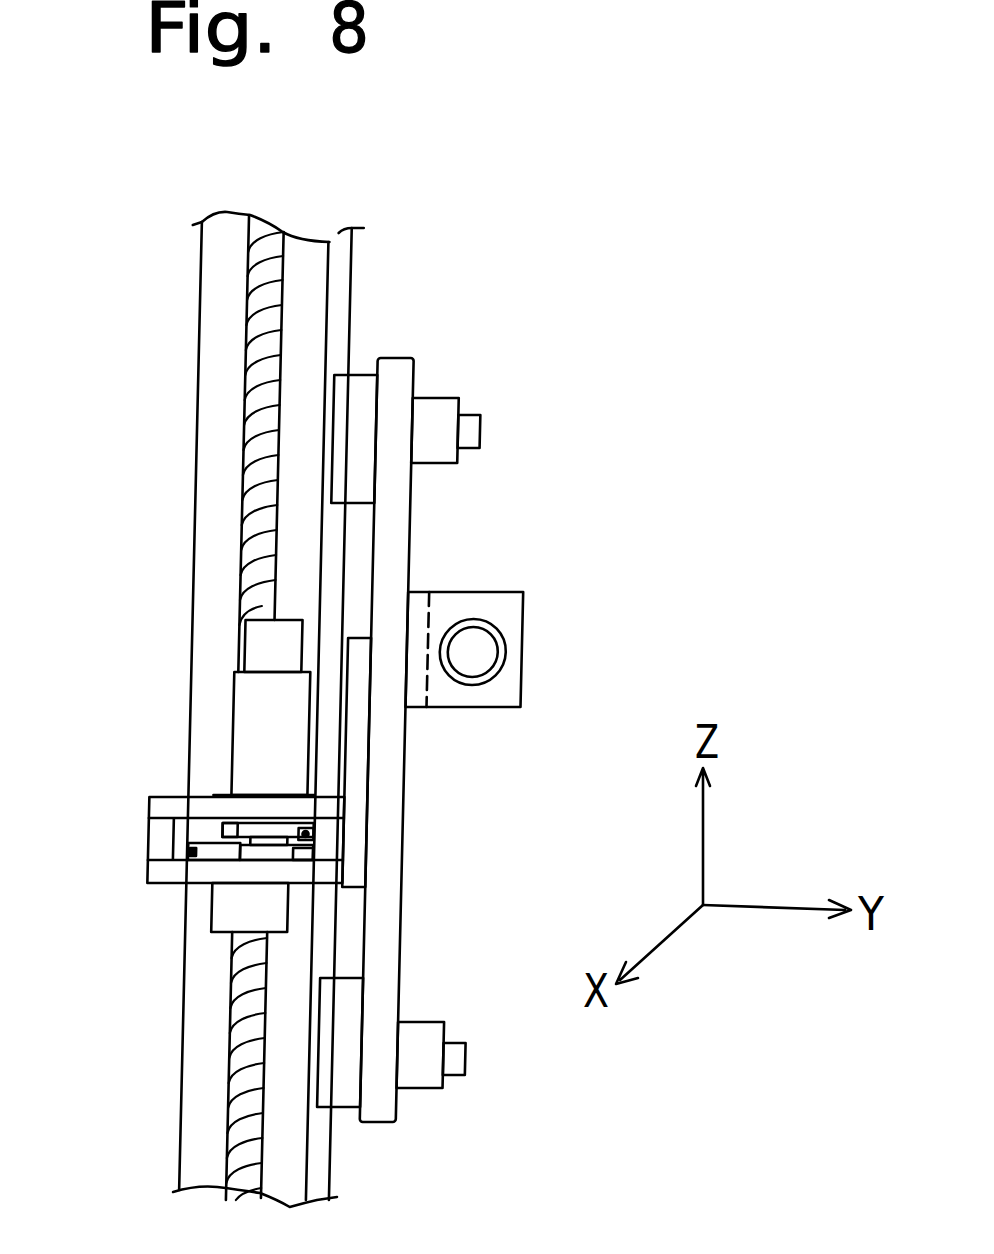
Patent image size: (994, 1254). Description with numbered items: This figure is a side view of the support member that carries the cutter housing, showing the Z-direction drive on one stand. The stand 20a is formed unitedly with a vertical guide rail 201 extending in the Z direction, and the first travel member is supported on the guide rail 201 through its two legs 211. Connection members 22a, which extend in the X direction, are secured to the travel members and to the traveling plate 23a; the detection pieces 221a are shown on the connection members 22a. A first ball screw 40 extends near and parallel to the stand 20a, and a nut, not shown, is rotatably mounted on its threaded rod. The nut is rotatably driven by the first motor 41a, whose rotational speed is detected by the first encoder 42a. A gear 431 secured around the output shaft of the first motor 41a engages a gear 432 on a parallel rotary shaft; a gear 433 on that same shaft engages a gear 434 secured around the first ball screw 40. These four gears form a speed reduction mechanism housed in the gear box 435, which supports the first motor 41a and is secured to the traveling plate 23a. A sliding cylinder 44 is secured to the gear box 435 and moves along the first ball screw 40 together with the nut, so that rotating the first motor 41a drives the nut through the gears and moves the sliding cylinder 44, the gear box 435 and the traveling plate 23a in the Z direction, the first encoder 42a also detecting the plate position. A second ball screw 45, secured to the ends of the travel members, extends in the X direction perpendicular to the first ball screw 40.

The stand 20a is at (313, 260).
The first ball screw 40 is at (273, 300).
The guide rail 201 is at (340, 337).
The leg 211 is at (363, 397).
The detection piece 221a is at (470, 435).
The connection member 22a is at (435, 453).
The traveling plate 23a is at (395, 565).
The second ball screw 45 is at (500, 657).
The first encoder 42a is at (262, 646).
The first motor 41a is at (243, 720).
The gear box 435 is at (172, 810).
The gear 434 is at (193, 850).
The gear 433 is at (257, 863).
The gear 432 is at (303, 834).
The gear 431 is at (293, 848).
The sliding cylinder 44 is at (223, 913).